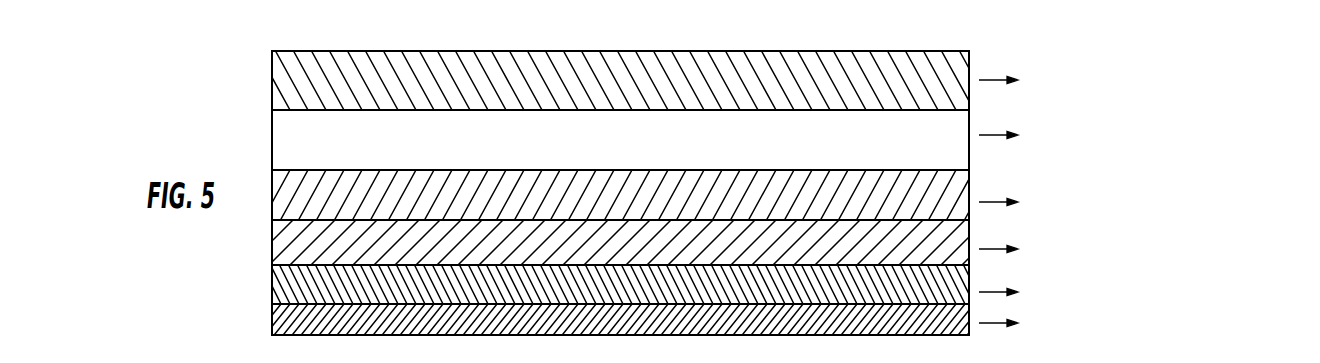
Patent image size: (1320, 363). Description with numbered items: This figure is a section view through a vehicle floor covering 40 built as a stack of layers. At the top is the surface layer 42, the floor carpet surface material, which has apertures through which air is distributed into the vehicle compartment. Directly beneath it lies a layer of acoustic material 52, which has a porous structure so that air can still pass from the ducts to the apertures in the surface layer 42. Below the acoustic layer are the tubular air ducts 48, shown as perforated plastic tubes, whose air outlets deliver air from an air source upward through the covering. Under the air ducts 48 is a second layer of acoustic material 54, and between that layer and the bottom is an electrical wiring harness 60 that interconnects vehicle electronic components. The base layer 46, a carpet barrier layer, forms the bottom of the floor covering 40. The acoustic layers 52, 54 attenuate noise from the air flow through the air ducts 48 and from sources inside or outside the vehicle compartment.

The vehicle floor covering 40 is at (811, 37).
The surface layer 42 is at (272, 75).
The layer of acoustic material 52 is at (272, 140).
The air ducts 48 is at (272, 192).
The layer of acoustic material 54 is at (272, 243).
The electrical wiring harness 60 is at (272, 285).
The base layer 46 is at (272, 310).